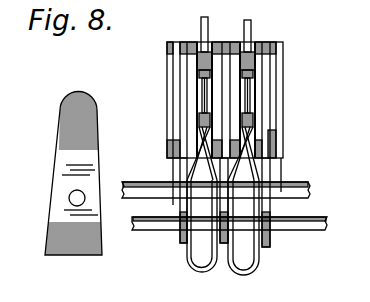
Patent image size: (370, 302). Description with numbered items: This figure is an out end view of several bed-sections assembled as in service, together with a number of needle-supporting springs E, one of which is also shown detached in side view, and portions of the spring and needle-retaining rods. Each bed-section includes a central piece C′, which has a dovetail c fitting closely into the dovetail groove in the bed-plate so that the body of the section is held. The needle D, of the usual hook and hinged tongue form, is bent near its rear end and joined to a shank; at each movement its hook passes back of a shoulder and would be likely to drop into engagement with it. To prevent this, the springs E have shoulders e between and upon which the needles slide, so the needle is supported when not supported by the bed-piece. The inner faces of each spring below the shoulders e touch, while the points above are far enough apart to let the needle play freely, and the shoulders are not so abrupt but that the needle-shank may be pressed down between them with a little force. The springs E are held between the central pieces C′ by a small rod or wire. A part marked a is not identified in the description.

The dovetail c is at (211, 115).
The central piece C′ is at (154, 172).
The rod a is at (235, 32).
The needle D is at (207, 73).
The shoulders e is at (200, 134).
The springs E is at (61, 147).